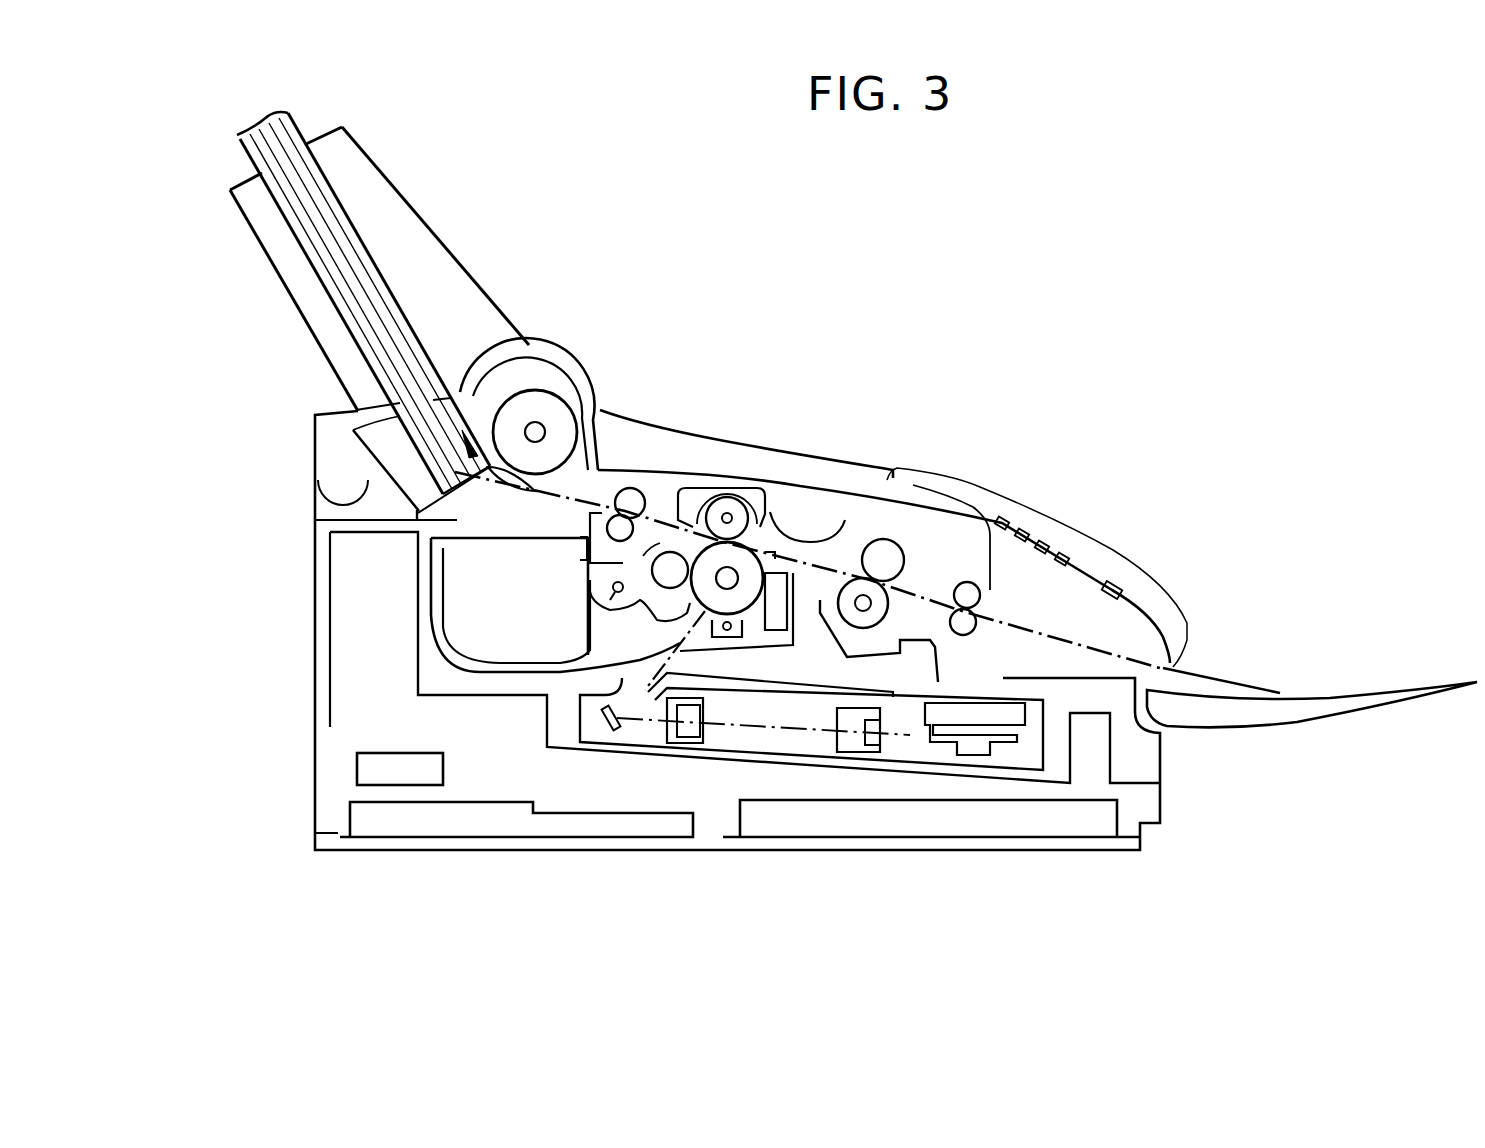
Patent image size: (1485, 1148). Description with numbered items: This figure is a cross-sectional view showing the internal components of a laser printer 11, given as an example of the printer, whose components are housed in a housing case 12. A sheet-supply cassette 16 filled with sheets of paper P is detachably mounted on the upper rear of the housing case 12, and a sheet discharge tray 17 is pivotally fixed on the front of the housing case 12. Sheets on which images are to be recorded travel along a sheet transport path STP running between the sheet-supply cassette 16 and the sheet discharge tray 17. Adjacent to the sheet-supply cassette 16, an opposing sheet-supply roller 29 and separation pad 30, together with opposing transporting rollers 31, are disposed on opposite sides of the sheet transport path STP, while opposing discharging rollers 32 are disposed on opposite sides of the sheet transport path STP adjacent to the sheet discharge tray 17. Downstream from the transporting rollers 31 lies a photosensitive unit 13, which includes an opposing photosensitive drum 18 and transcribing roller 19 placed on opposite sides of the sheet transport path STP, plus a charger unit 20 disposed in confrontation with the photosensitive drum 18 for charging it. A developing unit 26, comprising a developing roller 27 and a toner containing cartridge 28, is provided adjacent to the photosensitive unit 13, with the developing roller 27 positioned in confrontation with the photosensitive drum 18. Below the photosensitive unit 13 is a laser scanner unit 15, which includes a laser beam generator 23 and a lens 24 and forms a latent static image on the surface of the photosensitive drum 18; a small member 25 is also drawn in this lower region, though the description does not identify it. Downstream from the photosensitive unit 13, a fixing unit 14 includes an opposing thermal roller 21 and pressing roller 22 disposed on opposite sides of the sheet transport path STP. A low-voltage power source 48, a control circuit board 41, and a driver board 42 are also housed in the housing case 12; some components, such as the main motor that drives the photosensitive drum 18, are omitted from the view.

The laser printer 11 is at (728, 313).
The housing case 12 is at (315, 771).
The sheets of paper P is at (250, 155).
The sheet-supply cassette 16 is at (363, 274).
The sheet-supply roller 29 is at (553, 413).
The photosensitive unit 13 is at (805, 525).
The fixing unit 14 is at (943, 548).
The transporting rollers 31 is at (615, 525).
The developing roller 27 is at (673, 567).
The transcribing roller 19 is at (727, 516).
The photosensitive drum 18 is at (750, 567).
The pressing roller 22 is at (883, 556).
The thermal roller 21 is at (907, 590).
The discharging rollers 32 is at (983, 620).
The sheet transport path STP is at (1205, 677).
The sheet discharge tray 17 is at (1362, 706).
The separation pad 30 is at (417, 513).
The toner containing cartridge 28 is at (450, 605).
The low-voltage power source 48 is at (400, 778).
The developing unit 26 is at (600, 652).
The stopper 25 is at (603, 718).
The laser scanner unit 15 is at (828, 766).
The charger unit 20 is at (730, 630).
The lens 24 is at (870, 722).
The laser beam generator 23 is at (975, 752).
The control circuit board 41 is at (650, 828).
The driver board 42 is at (1083, 827).